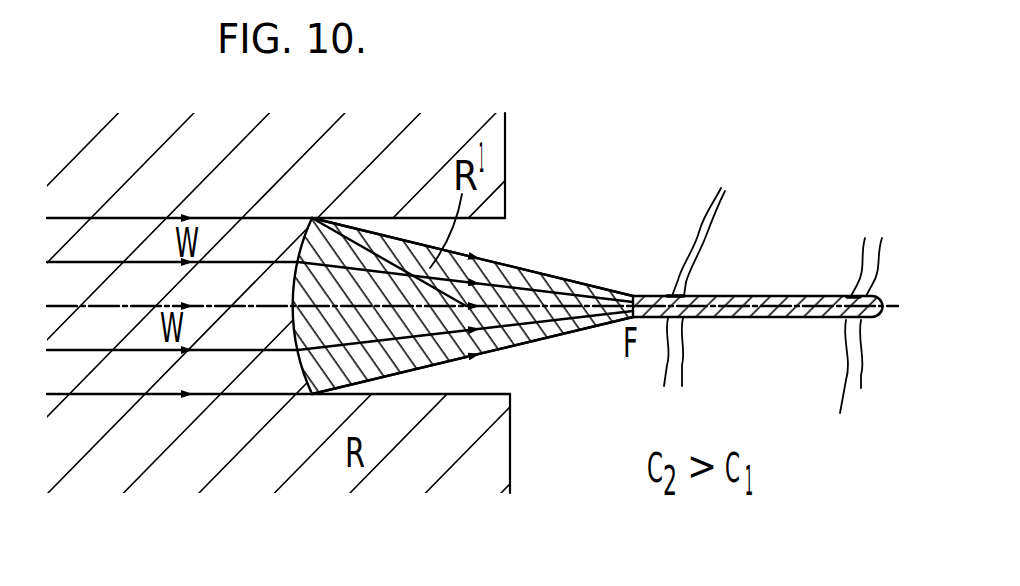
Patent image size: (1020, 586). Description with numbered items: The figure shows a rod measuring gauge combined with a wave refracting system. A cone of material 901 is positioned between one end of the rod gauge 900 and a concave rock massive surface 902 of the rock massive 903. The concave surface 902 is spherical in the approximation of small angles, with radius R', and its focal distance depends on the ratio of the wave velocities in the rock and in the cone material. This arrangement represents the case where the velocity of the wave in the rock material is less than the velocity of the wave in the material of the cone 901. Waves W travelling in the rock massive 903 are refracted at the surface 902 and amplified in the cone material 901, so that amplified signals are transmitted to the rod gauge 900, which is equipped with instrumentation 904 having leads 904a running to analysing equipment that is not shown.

The rod gauge 900 is at (761, 342).
The cone of material 901 is at (503, 280).
The concave rock massive surface 902 is at (342, 226).
The rock massive 903 is at (457, 438).
The instrumentation 904 is at (850, 296).
The leads 904a is at (773, 304).